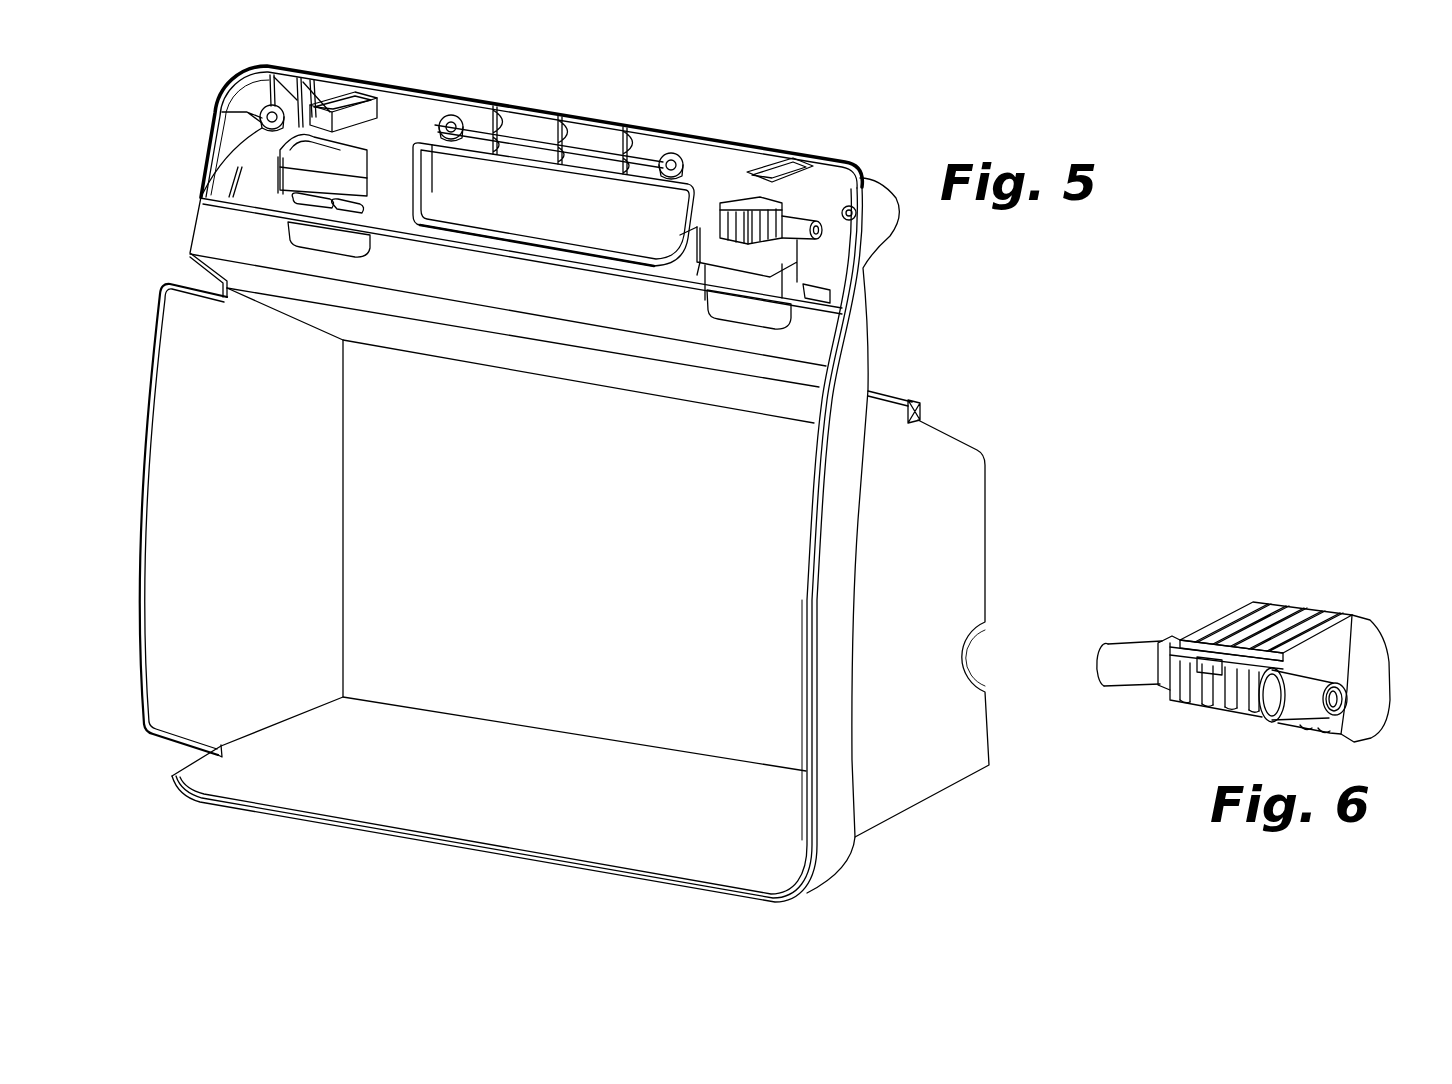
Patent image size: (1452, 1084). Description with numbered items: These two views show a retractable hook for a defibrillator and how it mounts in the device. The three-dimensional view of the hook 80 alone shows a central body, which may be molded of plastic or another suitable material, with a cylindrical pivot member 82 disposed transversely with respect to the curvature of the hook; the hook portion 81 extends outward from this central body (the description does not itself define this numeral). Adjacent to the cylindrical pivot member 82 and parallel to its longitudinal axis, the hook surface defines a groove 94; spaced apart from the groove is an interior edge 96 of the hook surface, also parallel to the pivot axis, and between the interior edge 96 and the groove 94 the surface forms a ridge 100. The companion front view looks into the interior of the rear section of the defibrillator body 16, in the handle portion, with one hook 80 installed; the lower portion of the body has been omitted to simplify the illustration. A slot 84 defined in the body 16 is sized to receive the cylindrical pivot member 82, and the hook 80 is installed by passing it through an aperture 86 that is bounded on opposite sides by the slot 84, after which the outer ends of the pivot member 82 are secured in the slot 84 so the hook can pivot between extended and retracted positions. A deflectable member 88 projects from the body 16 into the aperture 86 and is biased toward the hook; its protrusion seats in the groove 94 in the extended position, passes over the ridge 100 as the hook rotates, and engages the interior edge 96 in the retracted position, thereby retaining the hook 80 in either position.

In FIG. 5, the body 16 is at (852, 373).
In FIG. 5, the hook 80 is at (747, 205).
In FIG. 6, the hook 80 is at (1218, 572).
In FIG. 6, the latch housing 81 is at (1358, 665).
In FIG. 5, the cylindrical pivot member 82 is at (819, 218).
In FIG. 6, the cylindrical pivot member 82 is at (1138, 660).
In FIG. 5, the slot 84 is at (404, 190).
In FIG. 5, the aperture 86 is at (337, 162).
In FIG. 5, the deflectable member 88 is at (353, 117).
In FIG. 6, the groove 94 is at (1195, 638).
In FIG. 6, the interior edge 96 is at (1177, 673).
In FIG. 6, the ridge 100 is at (1252, 675).